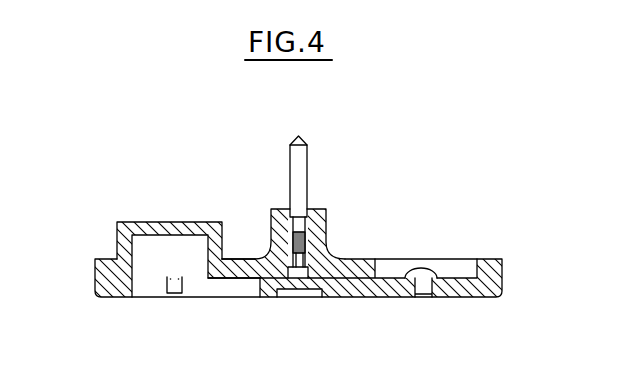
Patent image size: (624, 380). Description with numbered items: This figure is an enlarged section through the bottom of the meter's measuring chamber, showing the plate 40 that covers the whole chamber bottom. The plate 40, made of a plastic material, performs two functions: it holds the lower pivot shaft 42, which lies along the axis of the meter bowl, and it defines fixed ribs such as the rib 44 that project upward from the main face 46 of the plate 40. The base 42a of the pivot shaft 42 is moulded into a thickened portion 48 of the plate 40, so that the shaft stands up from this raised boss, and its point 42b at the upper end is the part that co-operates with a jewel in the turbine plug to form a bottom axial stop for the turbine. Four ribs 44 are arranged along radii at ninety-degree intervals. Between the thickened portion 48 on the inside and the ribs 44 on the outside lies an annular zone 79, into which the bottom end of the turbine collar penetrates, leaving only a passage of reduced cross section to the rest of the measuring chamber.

The plate 40 is at (411, 252).
The pivot shaft 42 is at (307, 171).
The base of the pivot shaft 42a is at (306, 246).
The point of the pivot shaft 42b is at (300, 136).
The fixed rib 44 is at (162, 232).
The main face of the plate 46 is at (437, 285).
The thickened portion 48 is at (293, 237).
The annular zone 79 is at (245, 258).